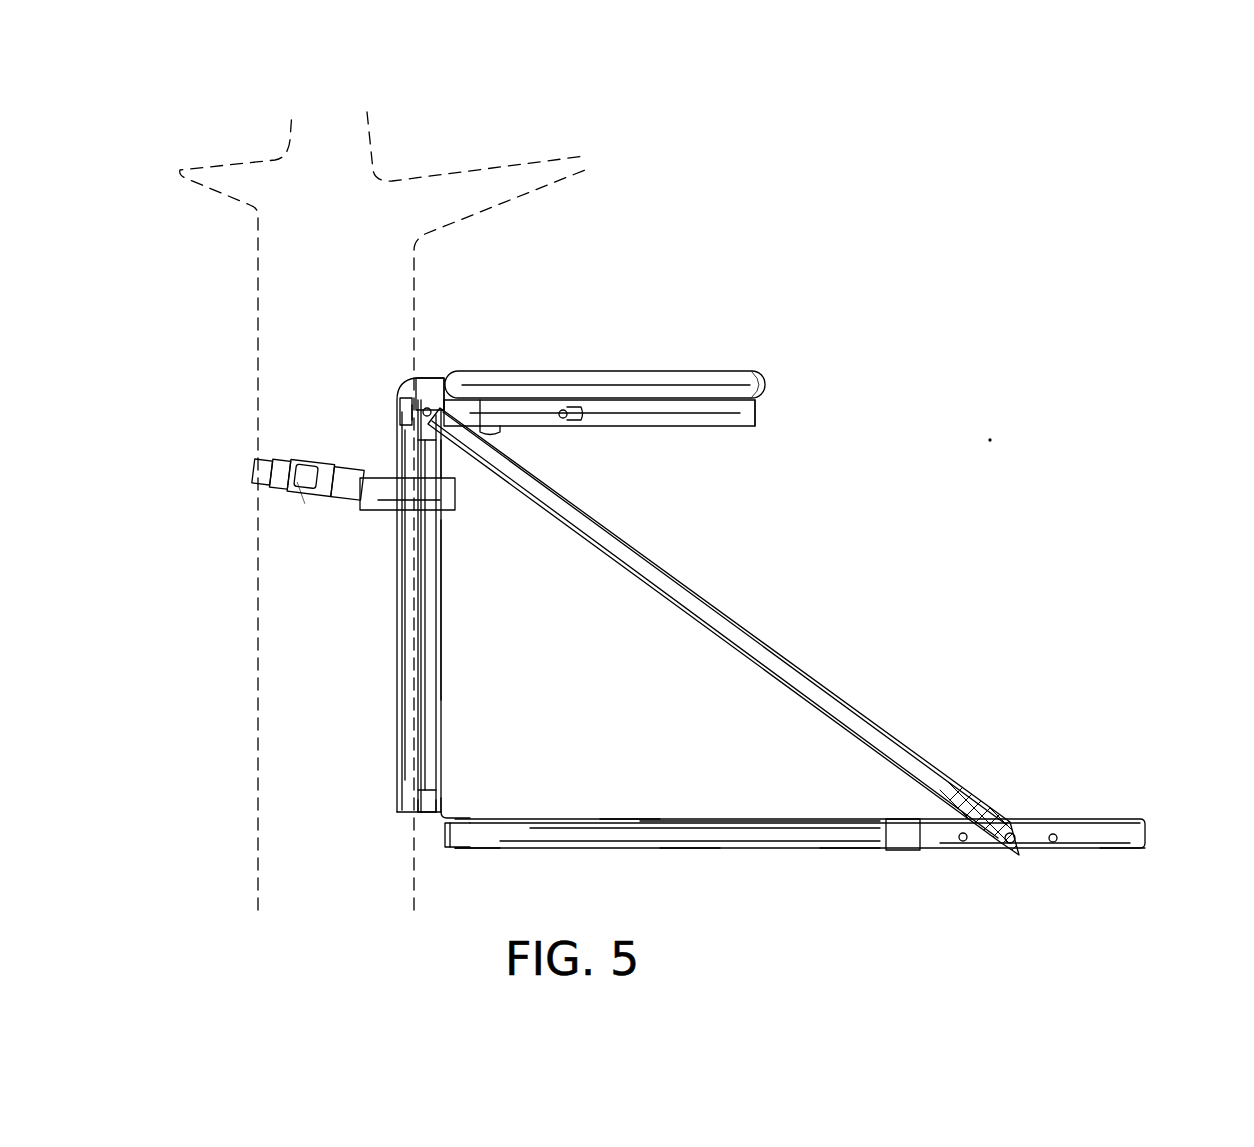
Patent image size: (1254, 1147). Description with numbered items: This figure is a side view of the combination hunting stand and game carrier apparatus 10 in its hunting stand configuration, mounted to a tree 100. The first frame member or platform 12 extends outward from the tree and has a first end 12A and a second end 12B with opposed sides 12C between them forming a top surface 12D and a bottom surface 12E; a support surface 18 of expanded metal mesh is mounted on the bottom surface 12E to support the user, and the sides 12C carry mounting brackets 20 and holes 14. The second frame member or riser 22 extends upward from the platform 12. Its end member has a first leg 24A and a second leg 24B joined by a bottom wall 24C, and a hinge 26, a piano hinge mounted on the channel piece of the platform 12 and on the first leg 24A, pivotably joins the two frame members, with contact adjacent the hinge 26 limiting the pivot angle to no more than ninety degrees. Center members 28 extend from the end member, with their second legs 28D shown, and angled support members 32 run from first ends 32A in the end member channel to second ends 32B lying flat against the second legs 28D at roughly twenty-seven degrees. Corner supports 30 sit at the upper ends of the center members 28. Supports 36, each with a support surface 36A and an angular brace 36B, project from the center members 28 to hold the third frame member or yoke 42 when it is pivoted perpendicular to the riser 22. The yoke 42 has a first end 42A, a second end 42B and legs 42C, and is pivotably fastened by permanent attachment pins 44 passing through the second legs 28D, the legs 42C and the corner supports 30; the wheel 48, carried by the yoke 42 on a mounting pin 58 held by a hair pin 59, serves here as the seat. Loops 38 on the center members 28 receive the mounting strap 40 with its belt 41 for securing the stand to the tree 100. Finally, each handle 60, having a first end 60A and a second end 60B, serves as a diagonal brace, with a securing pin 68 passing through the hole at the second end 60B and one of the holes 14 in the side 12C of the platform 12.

The combination hunting stand and game carrier apparatus 10 is at (764, 232).
The tree 100 is at (280, 262).
The first frame member 12 is at (780, 838).
The first end of first frame member 12A is at (1148, 846).
The second end of first frame member 12B is at (472, 850).
The sides of first frame member 12C is at (846, 845).
The top surface of first frame member 12D is at (692, 858).
The bottom surface of first frame member 12E is at (635, 812).
The holes in sides of first frame member 14 is at (1056, 843).
The support surface 18 is at (700, 820).
The mounting brackets 20 is at (905, 840).
The second frame member 22 is at (444, 598).
The first leg of end member 24A is at (445, 795).
The second leg of end member 24B is at (414, 806).
The bottom wall of end member 24C is at (440, 820).
The hinge 26 is at (462, 815).
The center members 28 is at (400, 650).
The second legs of center members 28D is at (400, 706).
The corner supports 30 is at (444, 382).
The angled support members 32 is at (438, 644).
The first end of support member 32A is at (420, 784).
The second end of support member 32B is at (422, 458).
The supports 36 is at (495, 432).
The support surface of support 36A is at (490, 410).
The angular brace of support 36B is at (458, 462).
The loops 38 is at (445, 510).
The mounting strap 40 is at (262, 470).
The belt 41 is at (312, 497).
The third frame member 42 is at (680, 400).
The first end of third frame member 42A is at (412, 410).
The second end of third frame member 42B is at (760, 402).
The legs of third frame member 42C is at (732, 426).
The attachment pins 44 is at (404, 400).
The wheel 48 is at (748, 384).
The mounting pin 58 is at (566, 410).
The hair pin 59 is at (572, 418).
The handles 60 is at (840, 712).
The first end of handle 60A is at (430, 380).
The second end of handle 60B is at (1002, 826).
The securing pins 68 is at (1012, 855).